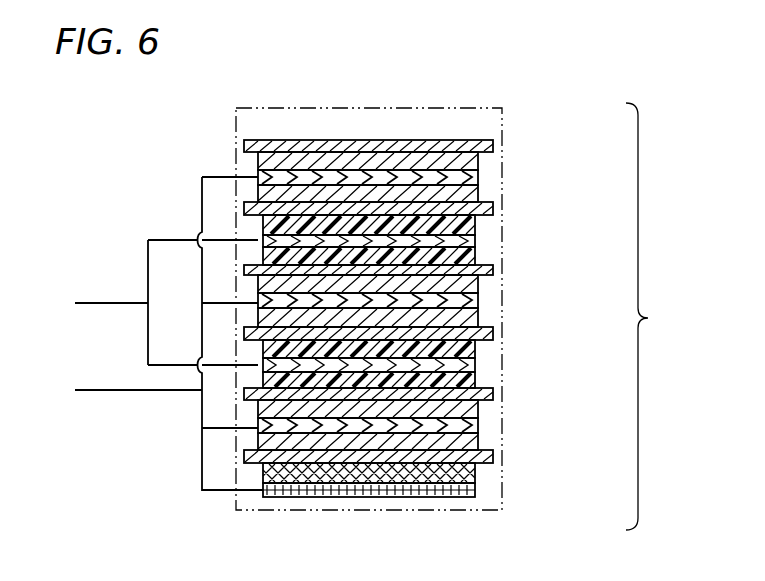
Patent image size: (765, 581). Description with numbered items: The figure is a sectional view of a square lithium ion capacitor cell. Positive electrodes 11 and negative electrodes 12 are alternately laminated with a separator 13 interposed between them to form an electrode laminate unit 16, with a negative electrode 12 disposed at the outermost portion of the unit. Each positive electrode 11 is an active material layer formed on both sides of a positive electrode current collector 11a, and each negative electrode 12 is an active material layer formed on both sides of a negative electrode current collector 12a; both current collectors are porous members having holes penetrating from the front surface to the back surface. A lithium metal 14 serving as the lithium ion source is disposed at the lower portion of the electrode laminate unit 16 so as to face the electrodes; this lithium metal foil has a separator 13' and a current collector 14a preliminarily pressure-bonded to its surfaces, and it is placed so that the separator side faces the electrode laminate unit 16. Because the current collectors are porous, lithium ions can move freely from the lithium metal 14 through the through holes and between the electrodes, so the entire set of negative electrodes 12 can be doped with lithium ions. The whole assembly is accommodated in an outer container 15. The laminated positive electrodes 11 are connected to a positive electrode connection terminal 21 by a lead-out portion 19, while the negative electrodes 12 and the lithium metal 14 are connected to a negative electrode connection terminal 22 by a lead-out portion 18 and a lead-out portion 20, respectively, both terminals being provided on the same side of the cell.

The positive electrode 11 is at (475, 225).
The positive electrode current collector 11a is at (475, 240).
The negative electrode 12 is at (478, 160).
The negative electrode current collector 12a is at (478, 177).
The separator 13 is at (435, 267).
The separator 13' is at (435, 472).
The lithium metal 14 is at (475, 475).
The current collector 14a is at (475, 490).
The outer container 15 is at (425, 511).
The electrode laminate unit 16 is at (653, 316).
The lead-out portion 18 is at (220, 177).
The lead-out portion 19 is at (176, 240).
The lead-out portion 20 is at (207, 492).
The positive electrode connection terminal 21 is at (113, 302).
The negative electrode connection terminal 22 is at (104, 392).